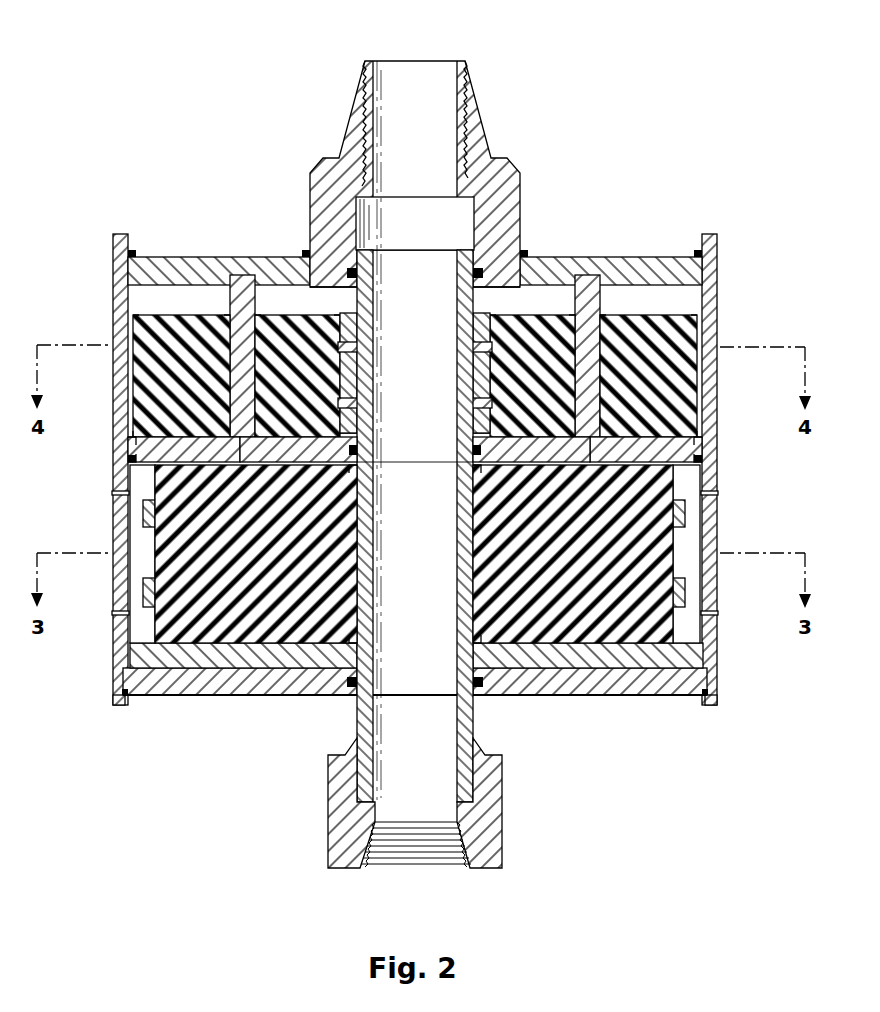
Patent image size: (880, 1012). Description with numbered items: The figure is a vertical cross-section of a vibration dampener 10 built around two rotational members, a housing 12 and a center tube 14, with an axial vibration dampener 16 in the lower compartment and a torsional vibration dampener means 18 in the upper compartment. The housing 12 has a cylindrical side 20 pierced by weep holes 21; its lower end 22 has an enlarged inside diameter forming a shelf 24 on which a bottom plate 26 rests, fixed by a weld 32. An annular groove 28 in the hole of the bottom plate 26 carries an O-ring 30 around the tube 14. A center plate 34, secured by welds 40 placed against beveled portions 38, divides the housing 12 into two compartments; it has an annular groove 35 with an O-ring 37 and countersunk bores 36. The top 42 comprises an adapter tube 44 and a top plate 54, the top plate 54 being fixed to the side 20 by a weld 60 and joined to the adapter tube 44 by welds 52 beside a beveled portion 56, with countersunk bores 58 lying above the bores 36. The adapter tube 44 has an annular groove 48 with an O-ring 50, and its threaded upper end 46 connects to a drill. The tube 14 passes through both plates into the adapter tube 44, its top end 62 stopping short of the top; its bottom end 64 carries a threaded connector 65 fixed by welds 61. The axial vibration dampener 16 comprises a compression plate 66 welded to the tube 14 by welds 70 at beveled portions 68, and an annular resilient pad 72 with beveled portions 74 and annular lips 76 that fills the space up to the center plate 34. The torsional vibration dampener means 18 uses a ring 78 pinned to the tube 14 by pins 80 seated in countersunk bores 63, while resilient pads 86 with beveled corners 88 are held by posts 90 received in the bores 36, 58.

The vibration dampener 10 is at (130, 111).
The housing 12 is at (734, 239).
The center tube 14 is at (410, 432).
The axial vibration dampener 16 is at (375, 565).
The torsional vibration dampener means 18 is at (152, 383).
The side 20 is at (130, 518).
The weep holes 21 is at (112, 493).
The lower end 22 is at (122, 693).
The shelf 24 is at (127, 658).
The bottom plate 26 is at (188, 694).
The annular groove 28 is at (330, 694).
The O-ring 30 is at (360, 685).
The weld 32 is at (130, 708).
The center plate 34 is at (423, 438).
The annular groove 35 is at (348, 451).
The countersunk bores 36 is at (258, 448).
The O-ring 37 is at (358, 462).
The beveled portions 38 is at (130, 442).
The welds 40 is at (130, 458).
The top 42 is at (572, 216).
The adapter tube 44 is at (503, 179).
The upper end 46 is at (462, 62).
The annular groove 48 is at (373, 277).
The O-ring 50 is at (475, 274).
The welds 52 is at (304, 282).
The top plate 54 is at (168, 274).
The beveled portion 56 is at (308, 288).
The countersunk bores 58 is at (240, 276).
The weld 60 is at (128, 252).
The welds 61 is at (525, 758).
The top end 62 is at (464, 243).
The countersunk bores 63 is at (415, 378).
The bottom end 64 is at (400, 802).
The connector 65 is at (434, 803).
The compression plate 66 is at (584, 694).
The beveled portions 68 is at (358, 659).
The welds 70 is at (473, 639).
The resilient pad 72 is at (184, 612).
The beveled portions 74 is at (357, 468).
The annular lips 76 is at (154, 578).
The ring 78 is at (458, 420).
The pins 80 is at (478, 348).
The resilient pads 86 is at (202, 329).
The beveled corners 88 is at (138, 315).
The posts 90 is at (248, 448).